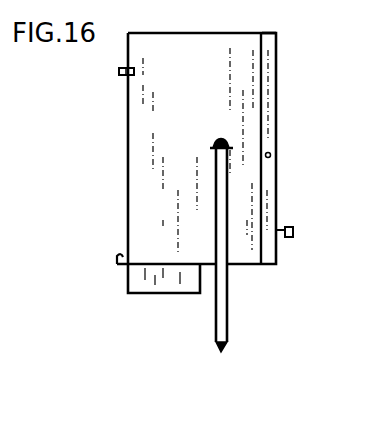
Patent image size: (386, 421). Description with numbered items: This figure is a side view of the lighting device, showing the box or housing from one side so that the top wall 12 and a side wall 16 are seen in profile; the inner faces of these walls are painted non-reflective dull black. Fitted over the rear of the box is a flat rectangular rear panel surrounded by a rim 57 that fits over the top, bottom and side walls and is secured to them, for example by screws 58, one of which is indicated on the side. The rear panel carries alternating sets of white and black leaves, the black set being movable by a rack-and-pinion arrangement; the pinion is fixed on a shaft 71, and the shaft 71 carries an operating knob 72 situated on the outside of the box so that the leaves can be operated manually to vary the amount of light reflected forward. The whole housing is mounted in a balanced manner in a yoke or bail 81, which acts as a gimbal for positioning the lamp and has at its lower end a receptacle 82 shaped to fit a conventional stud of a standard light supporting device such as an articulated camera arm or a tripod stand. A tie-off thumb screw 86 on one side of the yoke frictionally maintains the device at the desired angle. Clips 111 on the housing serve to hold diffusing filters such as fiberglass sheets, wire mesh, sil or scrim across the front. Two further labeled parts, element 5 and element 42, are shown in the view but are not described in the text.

The housing 5 is at (343, 1).
The top wall 12 is at (163, 33).
The side wall 16 is at (208, 111).
The mounting flange 42 is at (140, 280).
The rim 57 is at (268, 125).
The screws 58 is at (271, 155).
The shaft 71 is at (282, 238).
The operating knob 72 is at (294, 229).
The yoke or bail 81 is at (220, 218).
The receptacle 82 is at (233, 345).
The tie-off thumb screw 86 is at (221, 141).
The clips 111 is at (125, 68).